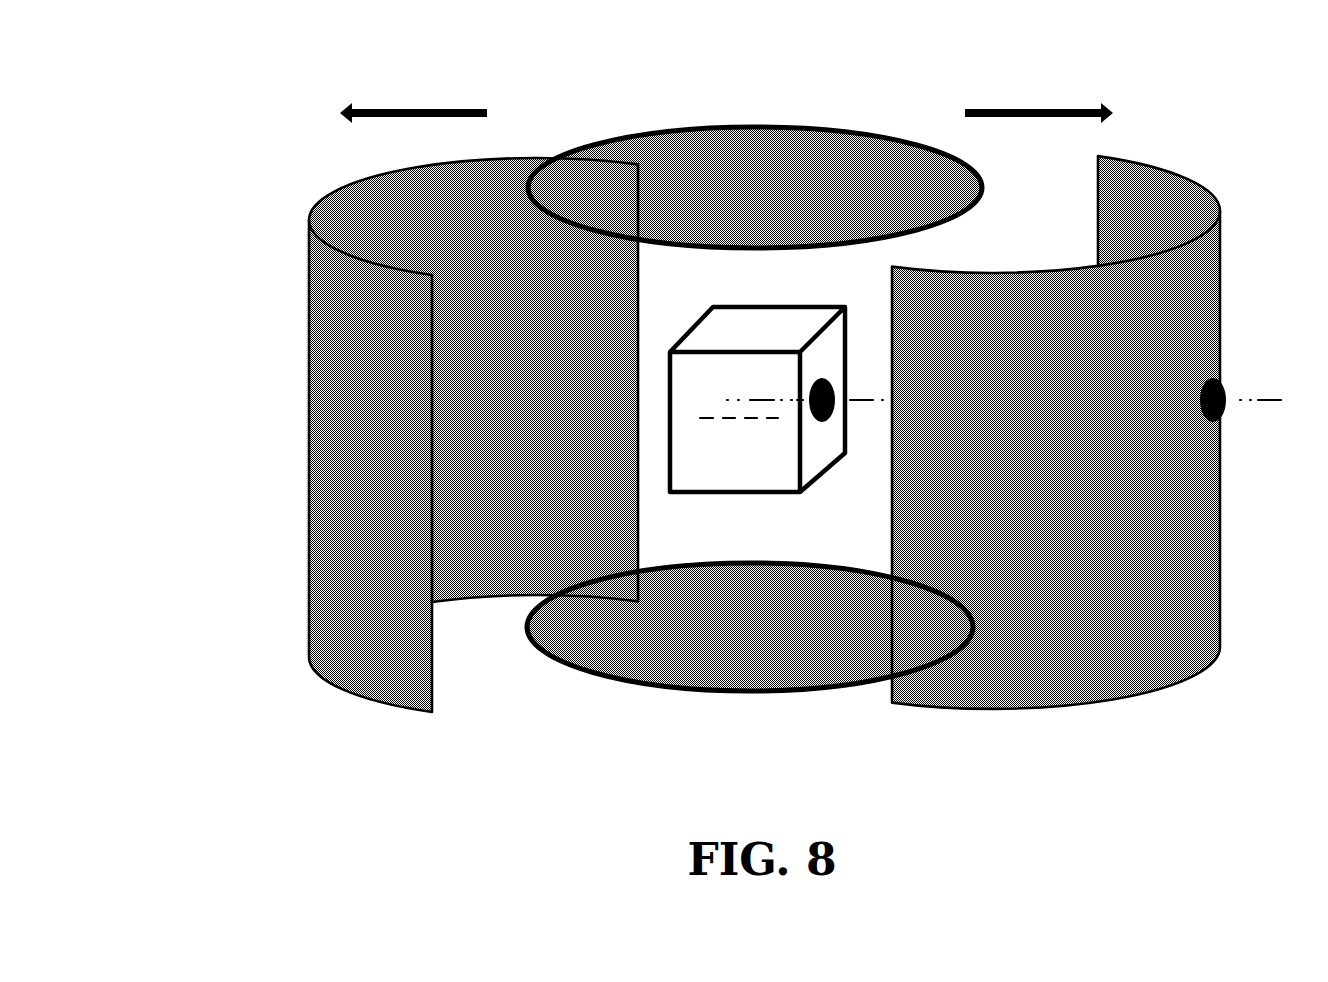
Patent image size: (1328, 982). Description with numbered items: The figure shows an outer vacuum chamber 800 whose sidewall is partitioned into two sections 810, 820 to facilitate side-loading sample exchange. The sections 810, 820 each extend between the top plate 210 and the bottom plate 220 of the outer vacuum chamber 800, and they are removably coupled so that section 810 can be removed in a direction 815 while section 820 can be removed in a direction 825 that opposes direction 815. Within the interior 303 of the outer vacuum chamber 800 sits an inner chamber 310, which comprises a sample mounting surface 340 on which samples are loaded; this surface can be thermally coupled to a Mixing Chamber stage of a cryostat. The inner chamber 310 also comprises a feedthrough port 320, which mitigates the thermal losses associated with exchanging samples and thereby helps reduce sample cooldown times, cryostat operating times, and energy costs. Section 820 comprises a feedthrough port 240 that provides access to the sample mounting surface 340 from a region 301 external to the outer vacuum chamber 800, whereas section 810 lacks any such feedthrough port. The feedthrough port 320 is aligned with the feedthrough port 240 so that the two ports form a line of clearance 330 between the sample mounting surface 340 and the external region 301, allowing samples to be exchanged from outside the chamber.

The outer vacuum chamber 800 is at (1198, 82).
The section 810 is at (479, 383).
The section 820 is at (1052, 531).
The direction 815 is at (412, 108).
The direction 825 is at (1047, 122).
The top plate 210 is at (722, 197).
The bottom plate 220 is at (724, 625).
The region external to outer vacuum chamber 301 is at (260, 508).
The interior of outer vacuum chamber 303 is at (744, 288).
The inner chamber 310 is at (748, 493).
The feedthrough port 320 is at (823, 422).
The line of clearance 330 is at (1272, 402).
The sample mounting surface 340 is at (740, 422).
The feedthrough port 240 is at (1200, 401).